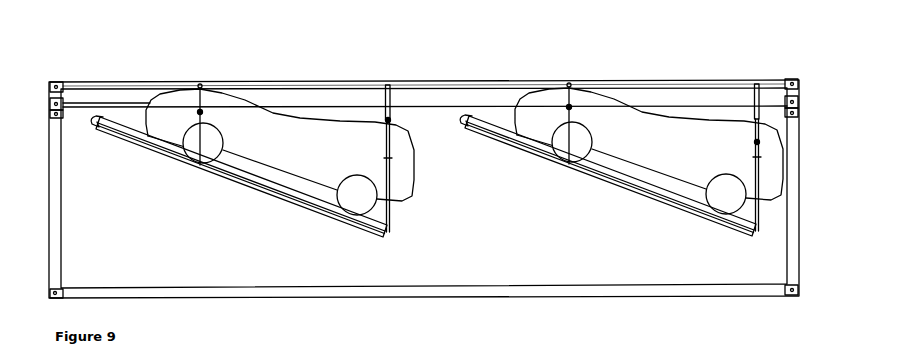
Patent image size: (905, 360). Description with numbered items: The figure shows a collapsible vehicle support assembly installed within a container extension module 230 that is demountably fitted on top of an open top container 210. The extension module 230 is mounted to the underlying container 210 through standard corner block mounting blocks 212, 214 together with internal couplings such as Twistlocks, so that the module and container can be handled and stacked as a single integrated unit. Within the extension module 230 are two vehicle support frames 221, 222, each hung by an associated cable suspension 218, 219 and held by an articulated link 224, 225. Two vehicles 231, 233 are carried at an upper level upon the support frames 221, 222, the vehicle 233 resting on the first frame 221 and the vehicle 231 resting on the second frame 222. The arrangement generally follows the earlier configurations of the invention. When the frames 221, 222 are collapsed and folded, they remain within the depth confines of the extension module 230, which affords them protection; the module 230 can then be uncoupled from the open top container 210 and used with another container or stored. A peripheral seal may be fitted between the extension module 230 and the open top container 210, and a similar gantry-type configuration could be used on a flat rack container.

The open top container 210 is at (42, 177).
The corner block mounting block 212 is at (46, 106).
The corner block mounting block 214 is at (62, 84).
The container extension module 230 is at (160, 63).
The cable suspension 218 is at (203, 111).
The vehicle support frame 221 is at (244, 174).
The articulated link 224 is at (391, 120).
The vehicle support frame 222 is at (608, 128).
The cable suspension 219 is at (559, 92).
The articulated link 225 is at (690, 126).
The vehicle 233 is at (314, 146).
The vehicle 231 is at (649, 151).